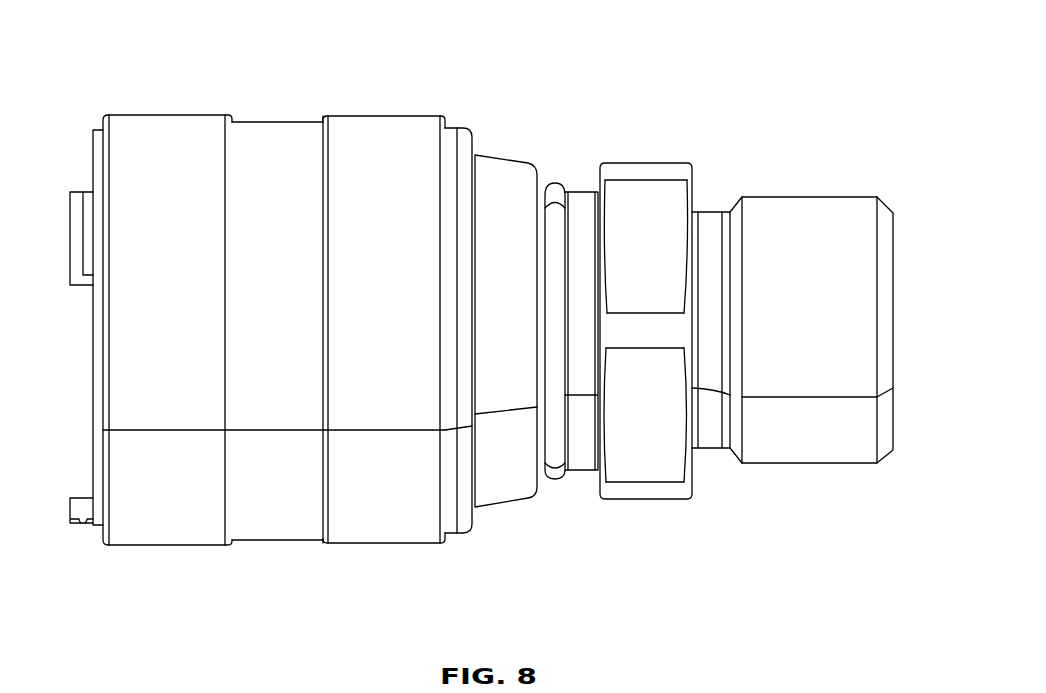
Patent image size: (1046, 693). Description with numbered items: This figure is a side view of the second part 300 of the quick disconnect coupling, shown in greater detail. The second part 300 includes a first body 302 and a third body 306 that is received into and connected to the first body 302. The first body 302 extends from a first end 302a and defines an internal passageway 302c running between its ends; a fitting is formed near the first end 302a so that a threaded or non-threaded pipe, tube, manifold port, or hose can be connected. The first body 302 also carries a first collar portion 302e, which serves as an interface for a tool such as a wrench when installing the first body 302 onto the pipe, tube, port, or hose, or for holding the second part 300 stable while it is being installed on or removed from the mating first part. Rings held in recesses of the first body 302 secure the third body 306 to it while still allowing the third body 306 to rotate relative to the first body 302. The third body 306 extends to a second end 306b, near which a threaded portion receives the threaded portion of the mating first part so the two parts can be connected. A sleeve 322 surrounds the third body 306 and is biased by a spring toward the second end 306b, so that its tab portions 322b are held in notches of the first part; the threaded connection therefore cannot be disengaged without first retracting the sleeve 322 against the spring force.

The second part 300 is at (121, 83).
The first body 302 is at (645, 163).
The first end 302a is at (892, 417).
The internal passageway 302c is at (800, 450).
The first collar portion 302e is at (645, 490).
The third body 306 is at (508, 477).
The second end 306b is at (95, 433).
The sleeve 322 is at (188, 510).
The tab portions 322b is at (75, 215).